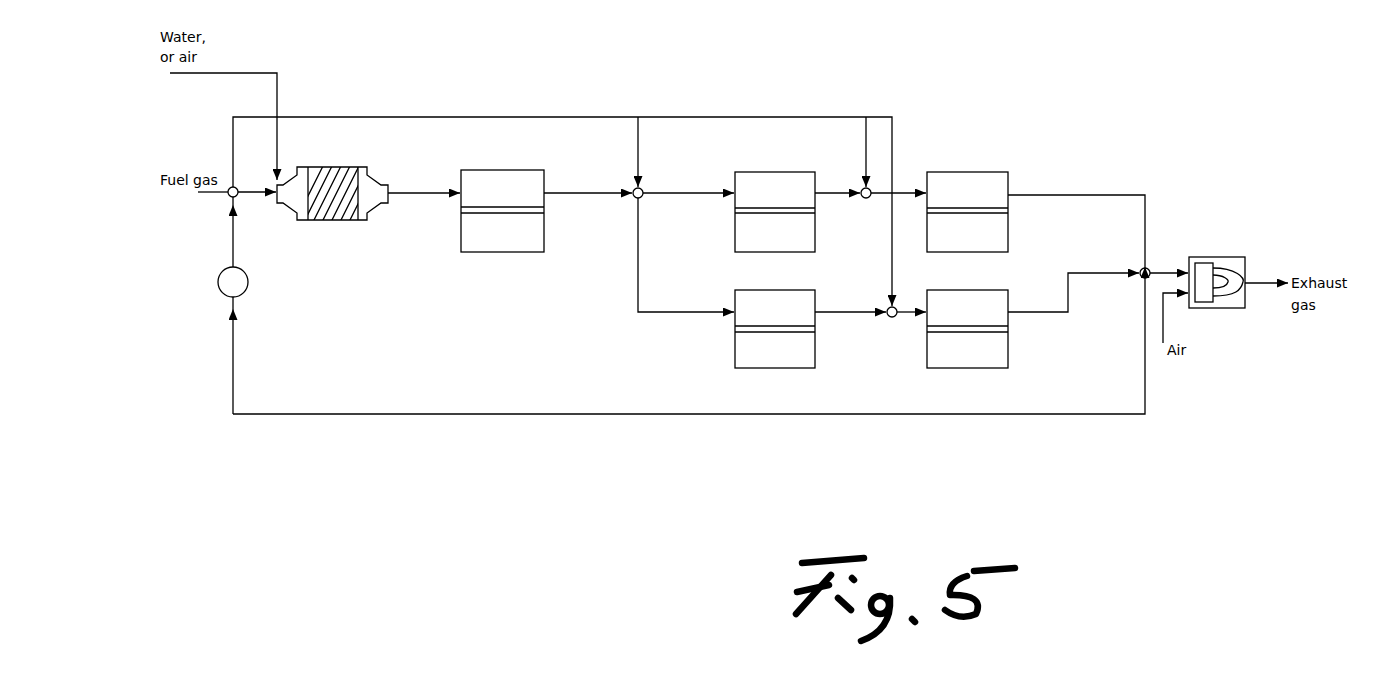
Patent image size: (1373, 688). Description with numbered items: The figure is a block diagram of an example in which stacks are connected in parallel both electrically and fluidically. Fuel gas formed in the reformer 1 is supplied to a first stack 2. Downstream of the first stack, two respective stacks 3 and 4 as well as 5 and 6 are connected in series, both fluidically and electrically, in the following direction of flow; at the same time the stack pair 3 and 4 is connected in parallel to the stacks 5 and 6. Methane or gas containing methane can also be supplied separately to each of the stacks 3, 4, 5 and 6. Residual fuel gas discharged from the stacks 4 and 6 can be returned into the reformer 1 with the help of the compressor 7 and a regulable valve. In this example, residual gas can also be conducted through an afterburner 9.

The reformer 1 is at (338, 224).
The first stack 2 is at (523, 212).
The stack 3 is at (756, 229).
The stack 4 is at (973, 237).
The stack 5 is at (769, 343).
The stack 6 is at (959, 340).
The compressor 7 is at (212, 298).
The afterburner 9 is at (1221, 248).